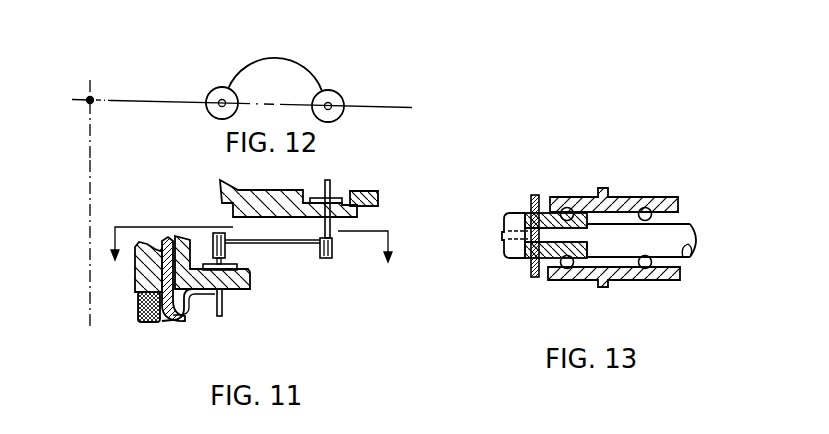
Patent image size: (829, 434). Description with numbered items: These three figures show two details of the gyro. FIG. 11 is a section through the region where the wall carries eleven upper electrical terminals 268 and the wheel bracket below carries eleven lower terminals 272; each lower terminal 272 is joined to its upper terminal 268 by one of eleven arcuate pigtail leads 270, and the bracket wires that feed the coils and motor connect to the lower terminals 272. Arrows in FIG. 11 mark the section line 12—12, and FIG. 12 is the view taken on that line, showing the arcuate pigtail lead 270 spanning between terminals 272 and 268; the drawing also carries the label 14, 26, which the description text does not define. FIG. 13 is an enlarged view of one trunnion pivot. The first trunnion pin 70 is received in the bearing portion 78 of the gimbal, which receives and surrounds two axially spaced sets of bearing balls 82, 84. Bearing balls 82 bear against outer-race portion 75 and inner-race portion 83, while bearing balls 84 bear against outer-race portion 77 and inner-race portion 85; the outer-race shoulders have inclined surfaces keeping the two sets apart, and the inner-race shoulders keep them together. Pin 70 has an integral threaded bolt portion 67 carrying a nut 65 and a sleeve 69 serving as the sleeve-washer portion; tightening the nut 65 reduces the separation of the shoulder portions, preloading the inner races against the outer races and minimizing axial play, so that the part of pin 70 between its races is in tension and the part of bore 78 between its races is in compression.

In FIG. 12, the frame 14 is at (215, 113).
In FIG. 11, the frame 14 is at (54, 245).
In FIG. 12, the table 26 is at (88, 98).
In FIG. 11, the table 26 is at (88, 291).
In FIG. 11, the section line 12 is at (255, 260).
In FIG. 12, the upper electrical terminals 268 is at (330, 105).
In FIG. 11, the upper electrical terminals 268 is at (330, 232).
In FIG. 12, the arcuate pigtail leads 270 is at (276, 57).
In FIG. 11, the arcuate pigtail leads 270 is at (278, 244).
In FIG. 12, the lower terminals 272 is at (221, 102).
In FIG. 11, the lower terminals 272 is at (212, 302).
In FIG. 13, the nut 65 is at (516, 258).
In FIG. 13, the bolt portion 67 is at (675, 250).
In FIG. 13, the sleeve 69 is at (543, 266).
In FIG. 13, the first trunnion pin 70 is at (588, 266).
In FIG. 13, the outer-race portion 75 is at (591, 210).
In FIG. 13, the outer-race portion 77 is at (638, 198).
In FIG. 13, the bearing portion 78 is at (653, 277).
In FIG. 13, the bearing balls 82 is at (566, 208).
In FIG. 13, the inner-race portion 83 is at (541, 208).
In FIG. 13, the bearing balls 84 is at (642, 208).
In FIG. 13, the inner-race portion 85 is at (660, 218).